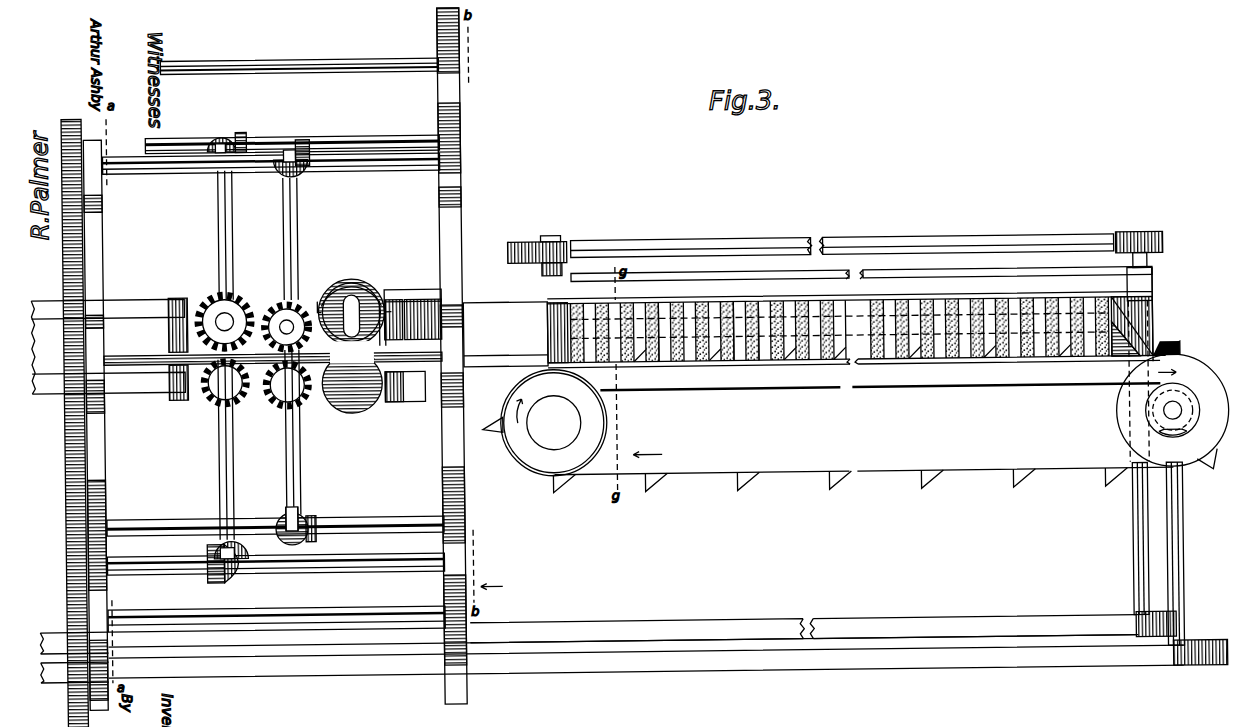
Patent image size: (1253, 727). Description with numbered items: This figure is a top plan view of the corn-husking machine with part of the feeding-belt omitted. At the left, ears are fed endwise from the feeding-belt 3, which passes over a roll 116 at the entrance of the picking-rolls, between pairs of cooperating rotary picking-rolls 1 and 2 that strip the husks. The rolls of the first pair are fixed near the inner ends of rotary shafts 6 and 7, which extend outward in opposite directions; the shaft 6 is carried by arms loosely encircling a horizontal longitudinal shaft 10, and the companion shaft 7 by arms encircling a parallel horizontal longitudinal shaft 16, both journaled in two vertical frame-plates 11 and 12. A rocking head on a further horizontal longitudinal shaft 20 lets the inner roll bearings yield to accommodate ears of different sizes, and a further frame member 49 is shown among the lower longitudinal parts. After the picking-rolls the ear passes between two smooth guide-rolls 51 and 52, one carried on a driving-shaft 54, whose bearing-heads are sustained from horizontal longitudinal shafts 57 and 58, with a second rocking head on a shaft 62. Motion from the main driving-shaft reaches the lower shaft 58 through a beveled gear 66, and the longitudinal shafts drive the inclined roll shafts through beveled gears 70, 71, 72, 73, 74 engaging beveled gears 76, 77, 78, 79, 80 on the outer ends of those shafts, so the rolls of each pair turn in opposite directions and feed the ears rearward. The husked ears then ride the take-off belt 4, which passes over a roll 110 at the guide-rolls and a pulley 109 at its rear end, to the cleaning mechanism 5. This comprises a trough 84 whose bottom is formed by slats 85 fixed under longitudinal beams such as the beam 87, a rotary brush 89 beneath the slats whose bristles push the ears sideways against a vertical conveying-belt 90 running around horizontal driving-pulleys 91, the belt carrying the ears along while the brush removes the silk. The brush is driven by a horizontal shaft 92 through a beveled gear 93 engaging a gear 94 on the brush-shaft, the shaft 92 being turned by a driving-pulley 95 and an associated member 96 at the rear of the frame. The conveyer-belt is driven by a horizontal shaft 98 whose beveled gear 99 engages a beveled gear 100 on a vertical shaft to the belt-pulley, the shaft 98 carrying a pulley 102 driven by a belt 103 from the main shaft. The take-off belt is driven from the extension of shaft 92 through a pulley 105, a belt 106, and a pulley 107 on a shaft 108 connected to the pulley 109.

The picking-roll 1 is at (238, 406).
The picking-roll 2 is at (300, 398).
The feeding-belt 3 is at (236, 345).
The take-off belt 4 is at (505, 334).
The cleaning mechanism 5 is at (856, 325).
The rotary shaft 6 is at (226, 248).
The companion shaft 7 is at (235, 478).
The horizontal longitudinal shaft 10 is at (356, 137).
The vertical frame-plate 11 is at (98, 268).
The vertical frame-plate 12 is at (442, 196).
The horizontal longitudinal shaft 16 is at (338, 570).
The horizontal longitudinal shaft 20 is at (350, 170).
The shaft 49 is at (396, 519).
The guide-roll 51 is at (368, 410).
The guide-roll 52 is at (355, 292).
The driving-shaft 54 is at (332, 292).
The horizontal longitudinal shaft 57 is at (396, 398).
The horizontal longitudinal shaft 58 is at (383, 294).
The horizontal longitudinal shaft 62 is at (378, 610).
The beveled gear 66 is at (880, 377).
The beveled gear 70 is at (216, 574).
The beveled gear 71 is at (241, 129).
The beveled gear 72 is at (306, 140).
The beveled gear 73 is at (316, 514).
The beveled gear 74 is at (348, 404).
The beveled gear 76 is at (240, 538).
The beveled gear 77 is at (221, 134).
The beveled gear 78 is at (312, 506).
The beveled gear 79 is at (292, 152).
The beveled gear 80 is at (402, 338).
The trough 84 is at (1122, 332).
The slat 85 is at (740, 304).
The longitudinal beam 87 is at (782, 308).
The rotary brush 89 is at (678, 306).
The vertical conveying-belt 90 is at (703, 468).
The horizontal driving-pulley 91 is at (604, 429).
The horizontal shaft 92 is at (1134, 519).
The beveled gear 93 is at (1160, 356).
The gear 94 is at (1130, 312).
The driving-pulley 95 is at (1123, 616).
The frame bar 96 is at (953, 618).
The horizontal shaft 98 is at (1184, 578).
The beveled gear 99 is at (1190, 430).
The beveled gear 100 is at (1192, 408).
The pulley 102 is at (1208, 648).
The belt 103 is at (1030, 660).
The pulley 105 is at (1150, 240).
The belt 106 is at (972, 244).
The pulley 107 is at (586, 241).
The shaft 108 is at (566, 277).
The pulley 109 is at (556, 305).
The roll 110 is at (408, 300).
The roll 116 is at (176, 298).